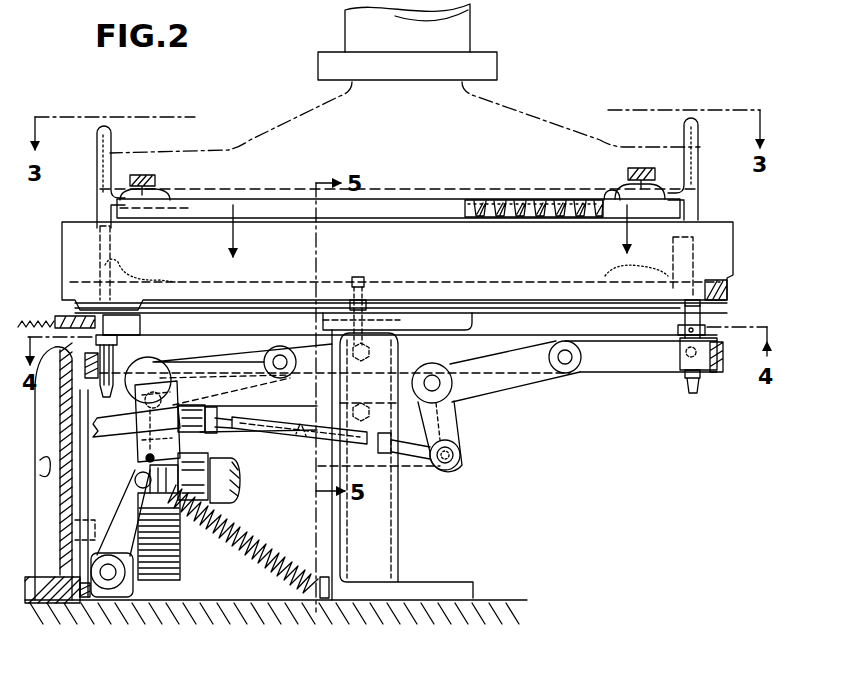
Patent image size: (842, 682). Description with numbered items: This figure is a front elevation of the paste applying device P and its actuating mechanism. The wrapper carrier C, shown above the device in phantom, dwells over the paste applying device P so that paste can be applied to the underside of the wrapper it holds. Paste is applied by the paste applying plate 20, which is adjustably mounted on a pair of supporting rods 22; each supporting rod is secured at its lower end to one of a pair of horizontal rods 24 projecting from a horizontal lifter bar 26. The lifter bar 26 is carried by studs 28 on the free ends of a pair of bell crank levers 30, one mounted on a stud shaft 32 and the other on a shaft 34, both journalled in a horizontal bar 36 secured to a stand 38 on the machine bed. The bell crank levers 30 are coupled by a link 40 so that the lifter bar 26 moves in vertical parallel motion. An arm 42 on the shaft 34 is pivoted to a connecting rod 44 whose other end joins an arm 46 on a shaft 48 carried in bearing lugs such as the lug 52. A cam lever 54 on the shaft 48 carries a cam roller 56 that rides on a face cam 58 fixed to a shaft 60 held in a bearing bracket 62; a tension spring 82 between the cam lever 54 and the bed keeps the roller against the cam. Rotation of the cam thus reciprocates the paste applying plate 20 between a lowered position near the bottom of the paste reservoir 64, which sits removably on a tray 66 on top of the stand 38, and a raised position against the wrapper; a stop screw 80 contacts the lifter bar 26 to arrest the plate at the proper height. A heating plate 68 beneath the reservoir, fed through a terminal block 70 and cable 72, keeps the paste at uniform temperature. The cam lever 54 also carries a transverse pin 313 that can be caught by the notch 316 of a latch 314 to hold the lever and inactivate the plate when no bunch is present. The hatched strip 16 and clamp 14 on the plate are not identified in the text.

The wrapper carrier C is at (514, 107).
The paste applying device P is at (399, 264).
The supporting rods 22 is at (111, 141).
The paste applying plate 20 is at (418, 203).
The clamping strip 16 is at (528, 200).
The clamp 14 is at (566, 200).
The paste reservoir 64 is at (62, 245).
The tray 66 is at (560, 305).
The heating plate 68 is at (707, 308).
The cable 72 is at (60, 320).
The terminal block 70 is at (140, 326).
The stop screw 80 is at (366, 278).
The stand 38 is at (388, 541).
The shaft 34 is at (437, 388).
The bell crank levers 30 is at (533, 362).
The studs 28 is at (565, 375).
The lifter bar 26 is at (614, 378).
The horizontal rods 24 is at (690, 357).
The arm 42 is at (460, 475).
The connecting rod 44 is at (409, 456).
The link 40 is at (279, 462).
The horizontal bar 36 is at (304, 394).
The latch 314 is at (195, 454).
The transverse pin 313 is at (197, 478).
The shaft 60 is at (239, 494).
The stud shaft 32 is at (153, 362).
The notch 316 is at (120, 425).
The bearing bracket 62 is at (85, 598).
The cam lever 54 is at (97, 548).
The arm 46 is at (100, 531).
The bearing lug 52 is at (133, 586).
The shaft 48 is at (108, 581).
The cam roller 56 is at (135, 472).
The face cam 58 is at (163, 583).
The tension spring 82 is at (281, 548).